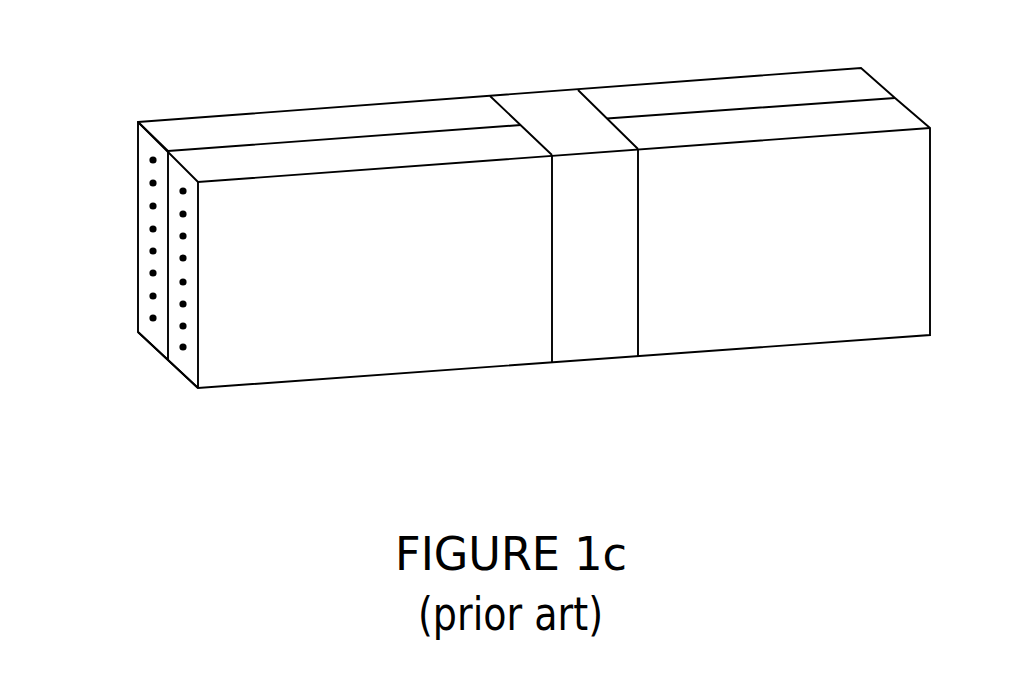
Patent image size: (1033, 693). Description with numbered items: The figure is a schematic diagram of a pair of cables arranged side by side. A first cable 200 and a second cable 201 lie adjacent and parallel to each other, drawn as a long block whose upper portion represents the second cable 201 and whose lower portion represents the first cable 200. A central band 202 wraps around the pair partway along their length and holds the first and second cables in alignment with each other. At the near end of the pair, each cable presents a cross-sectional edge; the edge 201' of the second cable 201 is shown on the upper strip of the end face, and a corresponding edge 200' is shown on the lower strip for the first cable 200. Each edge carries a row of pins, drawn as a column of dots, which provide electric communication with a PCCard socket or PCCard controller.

The first cable 200 is at (534, 263).
The second cable 201 is at (531, 199).
The central band 202 is at (547, 108).
The cross-sectional edge 201' is at (120, 111).
The end face of substrate 200' is at (168, 388).